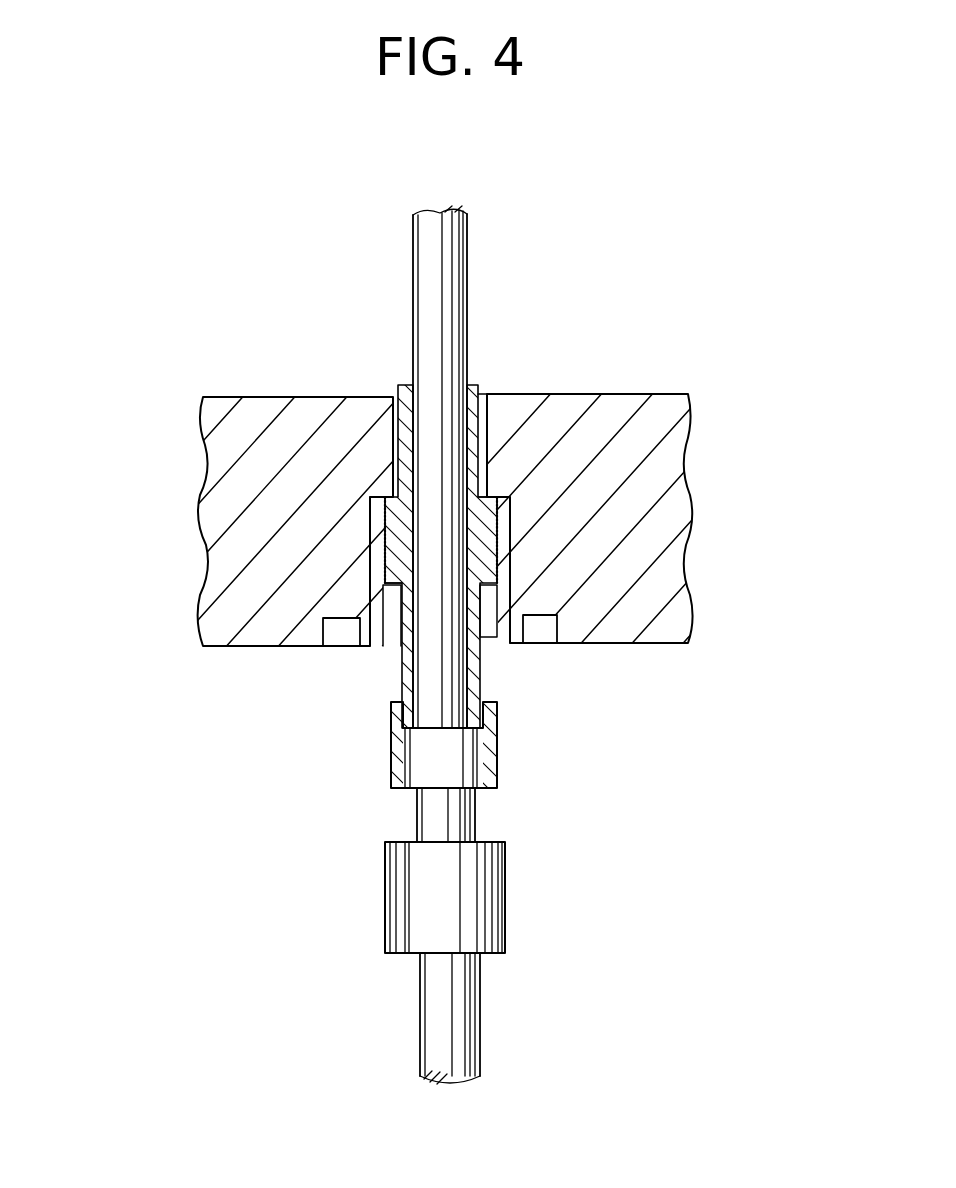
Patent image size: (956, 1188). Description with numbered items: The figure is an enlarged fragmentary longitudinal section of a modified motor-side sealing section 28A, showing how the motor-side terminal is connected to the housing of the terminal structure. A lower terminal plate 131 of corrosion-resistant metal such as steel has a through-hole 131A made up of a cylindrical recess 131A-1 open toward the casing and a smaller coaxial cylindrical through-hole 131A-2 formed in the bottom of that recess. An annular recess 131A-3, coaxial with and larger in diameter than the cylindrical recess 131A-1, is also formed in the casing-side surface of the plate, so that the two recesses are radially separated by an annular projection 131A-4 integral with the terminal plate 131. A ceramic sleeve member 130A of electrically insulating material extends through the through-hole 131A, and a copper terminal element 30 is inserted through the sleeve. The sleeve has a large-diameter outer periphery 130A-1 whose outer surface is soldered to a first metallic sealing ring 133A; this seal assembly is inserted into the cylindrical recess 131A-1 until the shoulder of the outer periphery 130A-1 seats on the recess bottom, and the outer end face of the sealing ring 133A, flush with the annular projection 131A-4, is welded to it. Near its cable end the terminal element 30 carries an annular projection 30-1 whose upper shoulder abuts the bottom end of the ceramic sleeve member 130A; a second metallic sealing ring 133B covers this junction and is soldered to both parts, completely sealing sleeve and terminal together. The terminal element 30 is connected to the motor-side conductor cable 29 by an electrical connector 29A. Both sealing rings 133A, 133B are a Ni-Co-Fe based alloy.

The modified motor-side sealing section 28A is at (363, 362).
The motor-side conductor cable 29 is at (480, 1028).
The electrical connector 29A is at (477, 900).
The copper terminal element 30 is at (456, 258).
The annular projection 30-1 is at (430, 763).
The sleeve member 130A is at (393, 465).
The outer periphery 130A-1 is at (385, 533).
The lower terminal plate 131 is at (660, 568).
The through-hole 131A is at (480, 400).
The cylindrical recess 131A-1 is at (517, 543).
The cylindrical through-hole 131A-2 is at (483, 450).
The annular recess 131A-3 is at (540, 618).
The annular projection 131A-4 is at (518, 645).
The first metallic sealing ring 133A is at (387, 576).
The second metallic sealing ring 133B is at (391, 737).